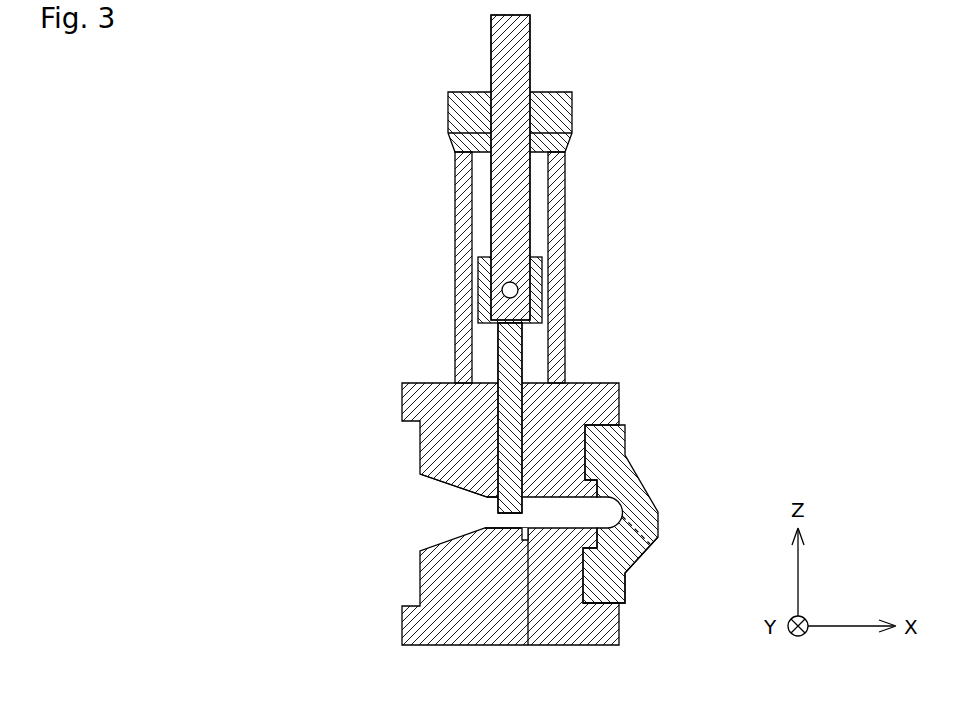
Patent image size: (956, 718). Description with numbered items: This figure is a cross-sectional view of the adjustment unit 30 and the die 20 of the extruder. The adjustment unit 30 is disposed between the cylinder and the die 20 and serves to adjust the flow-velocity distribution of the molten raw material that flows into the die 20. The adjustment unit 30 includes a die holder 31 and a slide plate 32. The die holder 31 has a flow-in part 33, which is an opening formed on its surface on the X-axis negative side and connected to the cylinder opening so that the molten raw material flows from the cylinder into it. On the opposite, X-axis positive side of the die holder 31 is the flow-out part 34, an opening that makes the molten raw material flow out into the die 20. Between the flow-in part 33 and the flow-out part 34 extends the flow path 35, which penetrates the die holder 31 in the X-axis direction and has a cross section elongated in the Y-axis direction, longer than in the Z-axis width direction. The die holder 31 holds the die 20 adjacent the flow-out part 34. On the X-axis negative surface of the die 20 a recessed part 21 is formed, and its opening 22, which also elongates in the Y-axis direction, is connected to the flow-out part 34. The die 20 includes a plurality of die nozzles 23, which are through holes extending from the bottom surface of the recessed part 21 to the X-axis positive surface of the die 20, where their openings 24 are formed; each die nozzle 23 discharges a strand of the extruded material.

The die 20 is at (580, 556).
The recessed part 21 is at (606, 502).
The opening 22 is at (580, 527).
The die nozzles 23 is at (661, 527).
The openings 24 is at (645, 548).
The adjustment unit 30 is at (714, 207).
The die holder 31 is at (619, 392).
The slide plate 32 is at (516, 470).
The flow-in part 33 is at (428, 478).
The flow-out part 34 is at (598, 498).
The flow path 35 is at (505, 529).